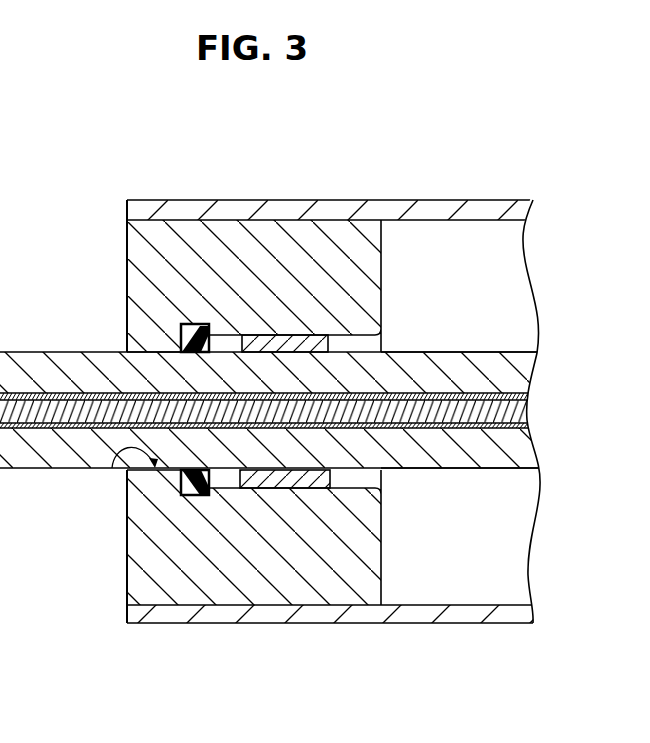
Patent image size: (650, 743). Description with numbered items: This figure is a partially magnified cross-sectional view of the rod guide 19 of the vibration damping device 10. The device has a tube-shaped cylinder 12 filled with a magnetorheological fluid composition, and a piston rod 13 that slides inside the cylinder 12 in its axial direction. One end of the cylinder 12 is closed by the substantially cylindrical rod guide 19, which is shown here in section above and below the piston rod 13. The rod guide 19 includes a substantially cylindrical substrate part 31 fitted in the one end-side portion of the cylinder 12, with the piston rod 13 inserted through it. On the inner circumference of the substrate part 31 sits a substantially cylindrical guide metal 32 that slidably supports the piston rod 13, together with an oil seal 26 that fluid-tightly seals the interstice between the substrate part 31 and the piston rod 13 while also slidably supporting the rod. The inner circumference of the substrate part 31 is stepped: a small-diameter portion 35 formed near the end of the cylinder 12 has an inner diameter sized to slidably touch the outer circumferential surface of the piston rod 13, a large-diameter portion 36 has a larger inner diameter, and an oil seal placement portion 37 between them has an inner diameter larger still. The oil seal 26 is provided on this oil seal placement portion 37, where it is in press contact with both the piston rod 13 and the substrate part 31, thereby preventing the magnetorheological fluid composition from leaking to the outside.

The vibration damping device 10 is at (318, 391).
The cylinder 12 is at (407, 623).
The piston rod 13 is at (62, 470).
The rod guide 19 is at (318, 225).
The oil seal 26 is at (190, 322).
The substrate part 31 is at (188, 233).
The guide metal 32 is at (287, 345).
The small-diameter portion 35 is at (112, 470).
The large-diameter portion 36 is at (276, 476).
The oil seal placement portion 37 is at (218, 484).